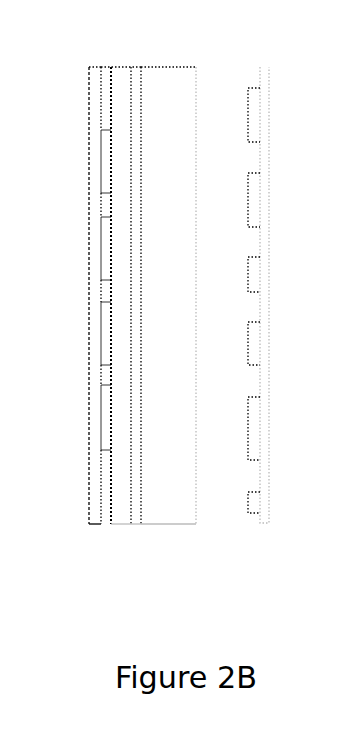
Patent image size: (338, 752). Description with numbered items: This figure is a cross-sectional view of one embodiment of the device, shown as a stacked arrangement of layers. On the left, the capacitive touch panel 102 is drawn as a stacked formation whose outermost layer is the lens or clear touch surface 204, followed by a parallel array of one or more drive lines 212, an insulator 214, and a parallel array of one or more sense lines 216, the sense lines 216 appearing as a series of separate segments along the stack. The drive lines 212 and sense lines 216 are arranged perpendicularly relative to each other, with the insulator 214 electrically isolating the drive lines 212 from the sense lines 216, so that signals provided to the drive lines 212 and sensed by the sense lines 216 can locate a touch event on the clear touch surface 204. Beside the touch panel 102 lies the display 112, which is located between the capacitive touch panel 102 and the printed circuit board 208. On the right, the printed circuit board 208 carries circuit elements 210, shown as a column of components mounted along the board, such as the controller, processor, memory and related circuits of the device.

The capacitive touch panel 102 is at (143, 63).
The display 112 is at (174, 72).
The clear touch surface 204 is at (88, 95).
The printed circuit board 208 is at (272, 128).
The circuit elements 210 is at (252, 90).
The drive lines 212 is at (137, 518).
The insulator 214 is at (125, 518).
The sense lines 216 is at (105, 163).